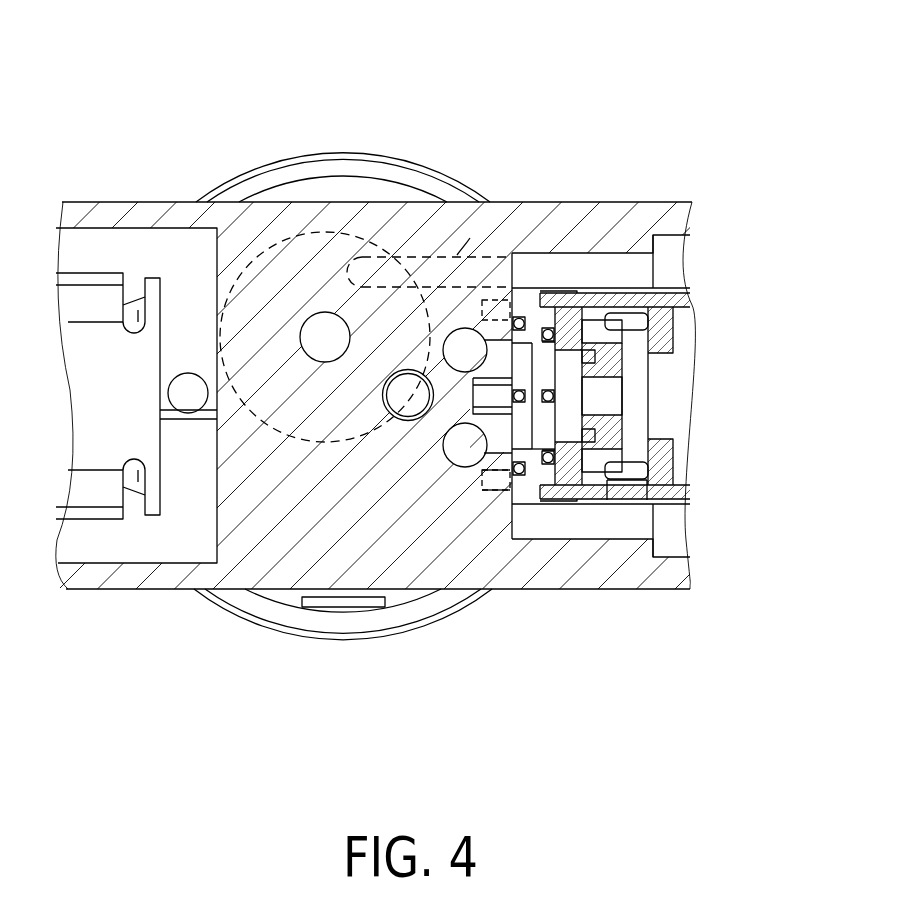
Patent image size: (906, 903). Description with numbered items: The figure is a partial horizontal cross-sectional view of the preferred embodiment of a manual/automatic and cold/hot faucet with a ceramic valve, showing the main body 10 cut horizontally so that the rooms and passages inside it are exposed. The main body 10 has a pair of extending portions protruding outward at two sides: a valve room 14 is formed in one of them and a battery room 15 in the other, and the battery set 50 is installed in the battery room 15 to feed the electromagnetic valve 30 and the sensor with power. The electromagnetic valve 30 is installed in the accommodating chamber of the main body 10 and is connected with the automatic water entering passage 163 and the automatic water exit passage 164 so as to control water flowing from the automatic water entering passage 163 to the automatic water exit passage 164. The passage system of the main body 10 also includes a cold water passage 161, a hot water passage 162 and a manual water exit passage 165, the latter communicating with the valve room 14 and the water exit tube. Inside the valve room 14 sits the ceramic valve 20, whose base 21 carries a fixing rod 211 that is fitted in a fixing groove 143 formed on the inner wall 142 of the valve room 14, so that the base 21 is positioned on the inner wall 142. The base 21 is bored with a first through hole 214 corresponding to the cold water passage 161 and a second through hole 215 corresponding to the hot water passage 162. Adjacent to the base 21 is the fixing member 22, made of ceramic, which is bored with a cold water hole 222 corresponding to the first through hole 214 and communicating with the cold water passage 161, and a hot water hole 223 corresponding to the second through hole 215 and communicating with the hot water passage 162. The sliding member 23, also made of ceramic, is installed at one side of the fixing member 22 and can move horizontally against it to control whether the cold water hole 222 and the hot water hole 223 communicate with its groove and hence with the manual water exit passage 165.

The main body 10 is at (245, 172).
The valve room 14 is at (637, 522).
The battery room 15 is at (123, 547).
The ceramic valve 20 is at (606, 509).
The base 21 is at (547, 322).
The fixing member 22 is at (572, 535).
The sliding member 23 is at (585, 405).
The electromagnetic valve 30 is at (317, 233).
The battery set 50 is at (90, 272).
The inner wall 142 is at (543, 463).
The fixing groove 143 is at (488, 490).
The cold water passage 161 is at (465, 447).
The hot water passage 162 is at (465, 350).
The automatic water entering passage 163 is at (457, 255).
The automatic water exit passage 164 is at (325, 337).
The manual water exit passage 165 is at (405, 393).
The fixing rod 211 is at (503, 490).
The first through hole 214 is at (568, 453).
The second through hole 215 is at (545, 368).
The cold water hole 222 is at (567, 370).
The hot water hole 223 is at (613, 343).